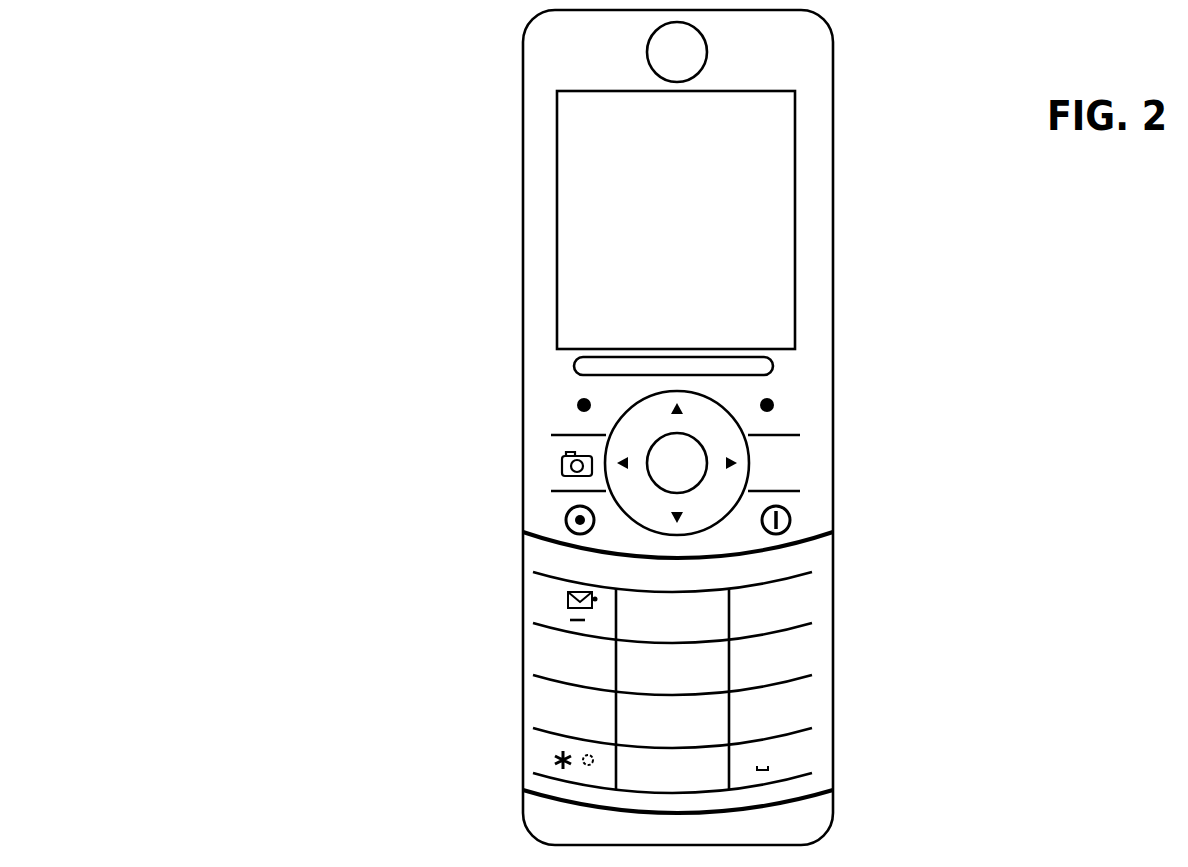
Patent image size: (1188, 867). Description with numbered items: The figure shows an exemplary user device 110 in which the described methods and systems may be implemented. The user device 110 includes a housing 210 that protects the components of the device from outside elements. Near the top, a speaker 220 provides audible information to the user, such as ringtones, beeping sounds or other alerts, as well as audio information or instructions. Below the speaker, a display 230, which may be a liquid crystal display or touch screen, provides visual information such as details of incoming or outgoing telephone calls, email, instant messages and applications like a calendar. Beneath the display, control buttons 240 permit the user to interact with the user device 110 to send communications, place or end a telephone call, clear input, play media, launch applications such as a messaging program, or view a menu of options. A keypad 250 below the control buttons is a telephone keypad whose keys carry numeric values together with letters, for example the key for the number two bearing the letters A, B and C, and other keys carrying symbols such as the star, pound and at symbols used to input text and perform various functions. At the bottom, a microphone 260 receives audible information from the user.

The user device 110 is at (152, 112).
The housing 210 is at (538, 230).
The speaker 220 is at (707, 43).
The display 230 is at (772, 258).
The control buttons 240 is at (807, 422).
The keypad 250 is at (833, 748).
The microphone 260 is at (794, 820).